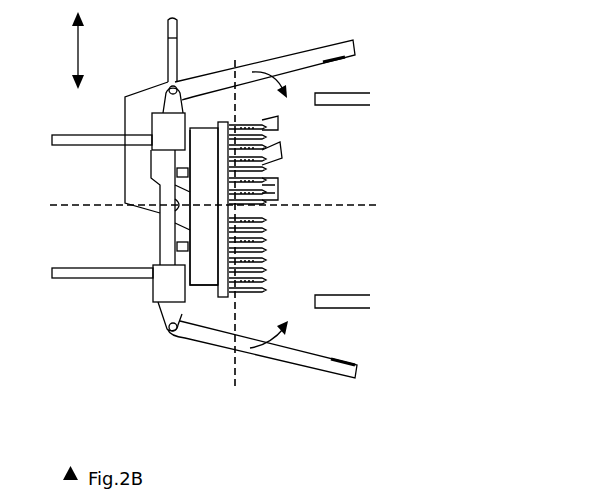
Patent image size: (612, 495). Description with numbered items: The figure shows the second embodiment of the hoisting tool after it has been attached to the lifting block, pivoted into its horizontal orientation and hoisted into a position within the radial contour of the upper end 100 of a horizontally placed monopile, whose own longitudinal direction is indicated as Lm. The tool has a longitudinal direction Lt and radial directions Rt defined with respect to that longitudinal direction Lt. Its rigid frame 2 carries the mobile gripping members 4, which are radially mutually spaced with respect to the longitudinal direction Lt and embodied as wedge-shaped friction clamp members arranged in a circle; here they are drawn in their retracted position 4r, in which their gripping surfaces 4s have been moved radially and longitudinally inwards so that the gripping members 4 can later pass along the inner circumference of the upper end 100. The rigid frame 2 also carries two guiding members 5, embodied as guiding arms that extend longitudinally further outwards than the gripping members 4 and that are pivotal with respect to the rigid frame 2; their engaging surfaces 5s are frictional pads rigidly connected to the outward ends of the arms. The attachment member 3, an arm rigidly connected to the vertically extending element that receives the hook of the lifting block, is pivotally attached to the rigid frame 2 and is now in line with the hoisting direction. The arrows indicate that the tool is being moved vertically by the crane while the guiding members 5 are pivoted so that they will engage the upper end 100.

The rigid frame 2 is at (207, 270).
The attachment member 3 is at (163, 52).
The gripping members 4 is at (268, 127).
The retracted position 4r is at (268, 153).
The gripping surfaces 4s is at (241, 122).
The guiding members 5 is at (201, 85).
The engaging surfaces 5s is at (333, 65).
The upper end 100 is at (363, 323).
The longitudinal direction of the upper end Lm is at (318, 204).
The longitudinal direction of the tool Lt is at (62, 207).
The radial directions Rt is at (231, 368).